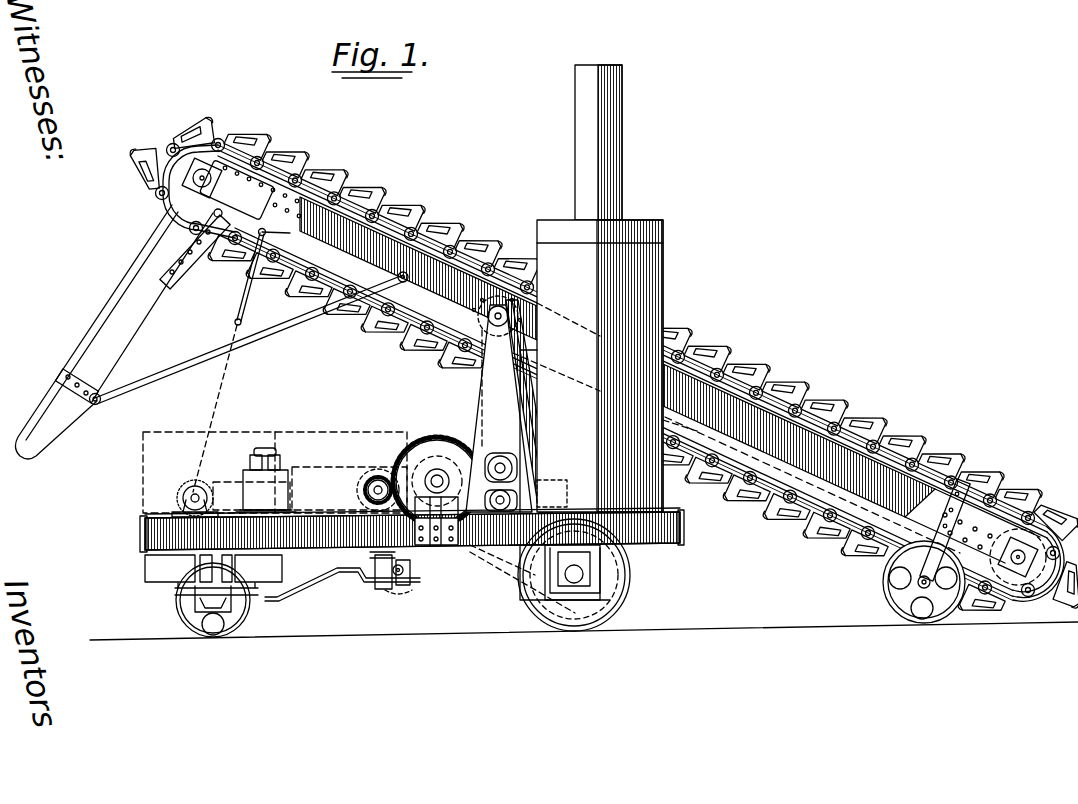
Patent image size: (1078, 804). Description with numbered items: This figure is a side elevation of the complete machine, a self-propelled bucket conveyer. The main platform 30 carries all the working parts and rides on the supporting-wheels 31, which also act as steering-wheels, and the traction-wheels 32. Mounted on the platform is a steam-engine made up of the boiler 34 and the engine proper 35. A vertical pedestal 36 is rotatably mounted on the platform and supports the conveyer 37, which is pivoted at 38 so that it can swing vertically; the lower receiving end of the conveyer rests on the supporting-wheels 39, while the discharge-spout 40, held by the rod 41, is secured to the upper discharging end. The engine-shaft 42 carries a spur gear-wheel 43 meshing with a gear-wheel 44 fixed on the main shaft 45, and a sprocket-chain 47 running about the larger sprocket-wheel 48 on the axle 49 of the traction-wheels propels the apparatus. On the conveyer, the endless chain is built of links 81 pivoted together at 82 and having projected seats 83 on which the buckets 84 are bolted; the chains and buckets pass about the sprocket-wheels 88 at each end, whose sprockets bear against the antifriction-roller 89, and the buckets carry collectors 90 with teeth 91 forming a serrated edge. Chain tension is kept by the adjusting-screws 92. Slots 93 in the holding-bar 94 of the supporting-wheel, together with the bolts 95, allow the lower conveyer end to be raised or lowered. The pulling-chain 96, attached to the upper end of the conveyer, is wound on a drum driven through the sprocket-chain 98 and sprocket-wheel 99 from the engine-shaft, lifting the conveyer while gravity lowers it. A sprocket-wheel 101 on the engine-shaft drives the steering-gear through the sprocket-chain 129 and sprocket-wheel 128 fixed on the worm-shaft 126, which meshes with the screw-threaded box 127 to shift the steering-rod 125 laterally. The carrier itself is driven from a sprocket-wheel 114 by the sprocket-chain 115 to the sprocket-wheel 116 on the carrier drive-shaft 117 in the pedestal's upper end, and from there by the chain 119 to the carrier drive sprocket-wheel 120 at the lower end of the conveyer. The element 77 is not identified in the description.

The main platform 30 is at (412, 551).
The supporting-wheels 31 is at (181, 613).
The traction-wheels 32 is at (541, 606).
The boiler 34 is at (606, 288).
The engine proper 35 is at (309, 446).
The vertical pedestal 36 is at (499, 408).
The conveyer 37 is at (462, 252).
The pivot 38 is at (510, 330).
The supporting-wheels 39 is at (888, 594).
The discharge-spout 40 is at (122, 332).
The rod 41 is at (178, 366).
The engine-shaft 42 is at (378, 477).
The spur gear-wheel 43 is at (370, 482).
The gear-wheel 44 is at (437, 490).
The main shaft 45 is at (425, 485).
The sprocket-chain 47 is at (499, 553).
The sprocket-wheel 48 is at (607, 572).
The axle 49 is at (586, 576).
The winding drum 77 is at (193, 491).
The links 81 is at (758, 380).
The pivot 82 is at (890, 442).
The projected seats 83 is at (934, 457).
The buckets 84 is at (980, 478).
The sprocket-wheels 88 is at (222, 143).
The antifriction-roller 89 is at (312, 180).
The collectors 90 is at (411, 228).
The teeth 91 is at (375, 206).
The adjusting-screws 92 is at (283, 233).
The slots 93 is at (972, 526).
The holding-bar 94 is at (945, 530).
The bolts 95 is at (967, 525).
The pulling-chain 96 is at (236, 321).
The sprocket-chain 98 is at (215, 408).
The sprocket-wheel 99 is at (180, 500).
The sprocket-wheel 101 is at (366, 490).
The sprocket-wheel 114 is at (497, 467).
The sprocket-chain 115 is at (478, 413).
The sprocket-wheel 116 is at (490, 312).
The carrier drive-shaft 117 is at (487, 318).
The chain 119 is at (802, 473).
The carrier drive sprocket-wheel 120 is at (1004, 555).
The steering-rod 125 is at (312, 582).
The worm-shaft 126 is at (388, 582).
The screw-threaded box 127 is at (412, 576).
The sprocket-wheel 128 is at (399, 588).
The sprocket-chain 129 is at (368, 556).